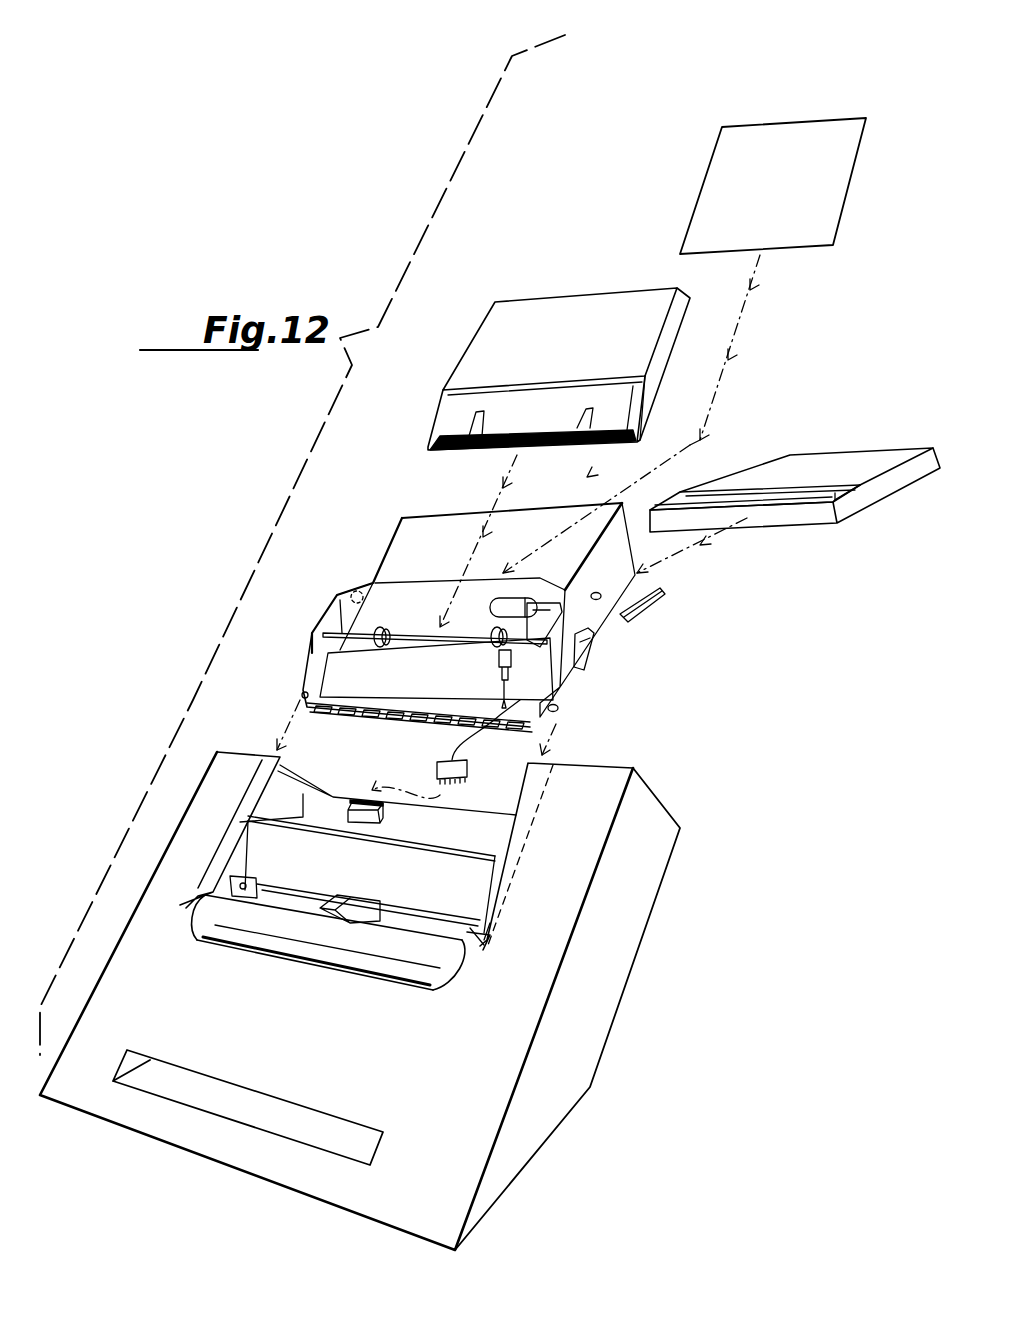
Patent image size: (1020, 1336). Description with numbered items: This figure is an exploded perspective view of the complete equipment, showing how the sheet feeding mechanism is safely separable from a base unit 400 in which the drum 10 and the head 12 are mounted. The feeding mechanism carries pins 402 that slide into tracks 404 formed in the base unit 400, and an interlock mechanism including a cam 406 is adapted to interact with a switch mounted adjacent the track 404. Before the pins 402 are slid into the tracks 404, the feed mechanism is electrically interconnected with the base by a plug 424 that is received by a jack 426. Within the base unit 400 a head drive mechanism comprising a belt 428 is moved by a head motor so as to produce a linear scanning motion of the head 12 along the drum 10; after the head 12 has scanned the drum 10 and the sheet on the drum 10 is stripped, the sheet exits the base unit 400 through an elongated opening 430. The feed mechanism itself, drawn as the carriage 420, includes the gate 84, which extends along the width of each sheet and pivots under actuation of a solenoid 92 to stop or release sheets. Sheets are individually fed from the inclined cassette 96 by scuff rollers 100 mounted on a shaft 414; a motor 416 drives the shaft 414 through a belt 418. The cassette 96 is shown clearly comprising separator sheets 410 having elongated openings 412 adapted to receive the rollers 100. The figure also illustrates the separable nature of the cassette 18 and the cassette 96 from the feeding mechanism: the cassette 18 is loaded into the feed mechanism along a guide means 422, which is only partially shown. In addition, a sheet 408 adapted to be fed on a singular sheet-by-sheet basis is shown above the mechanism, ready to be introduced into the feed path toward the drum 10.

The base unit 400 is at (580, 1045).
The elongated opening 430 is at (338, 1138).
The tracks 404 is at (257, 777).
The drum 10 is at (362, 940).
The head 12 is at (360, 901).
The belt 428 is at (312, 890).
The jack 426 is at (366, 823).
The plug 424 is at (440, 762).
The gate 84 is at (337, 706).
The carriage chassis 420 is at (432, 535).
The shaft 414 is at (342, 600).
The scuff roller 100 is at (377, 647).
The solenoid 92 is at (500, 660).
The motor 416 is at (510, 605).
The belt 418 is at (548, 610).
The cam 406 is at (595, 650).
The pins 402 is at (354, 590).
The cassette 96 is at (550, 323).
The separator sheets 410 is at (460, 420).
The elongated openings 412 is at (580, 417).
The sheet 408 is at (715, 197).
The cassette 18 is at (808, 467).
The guide means 422 is at (663, 597).